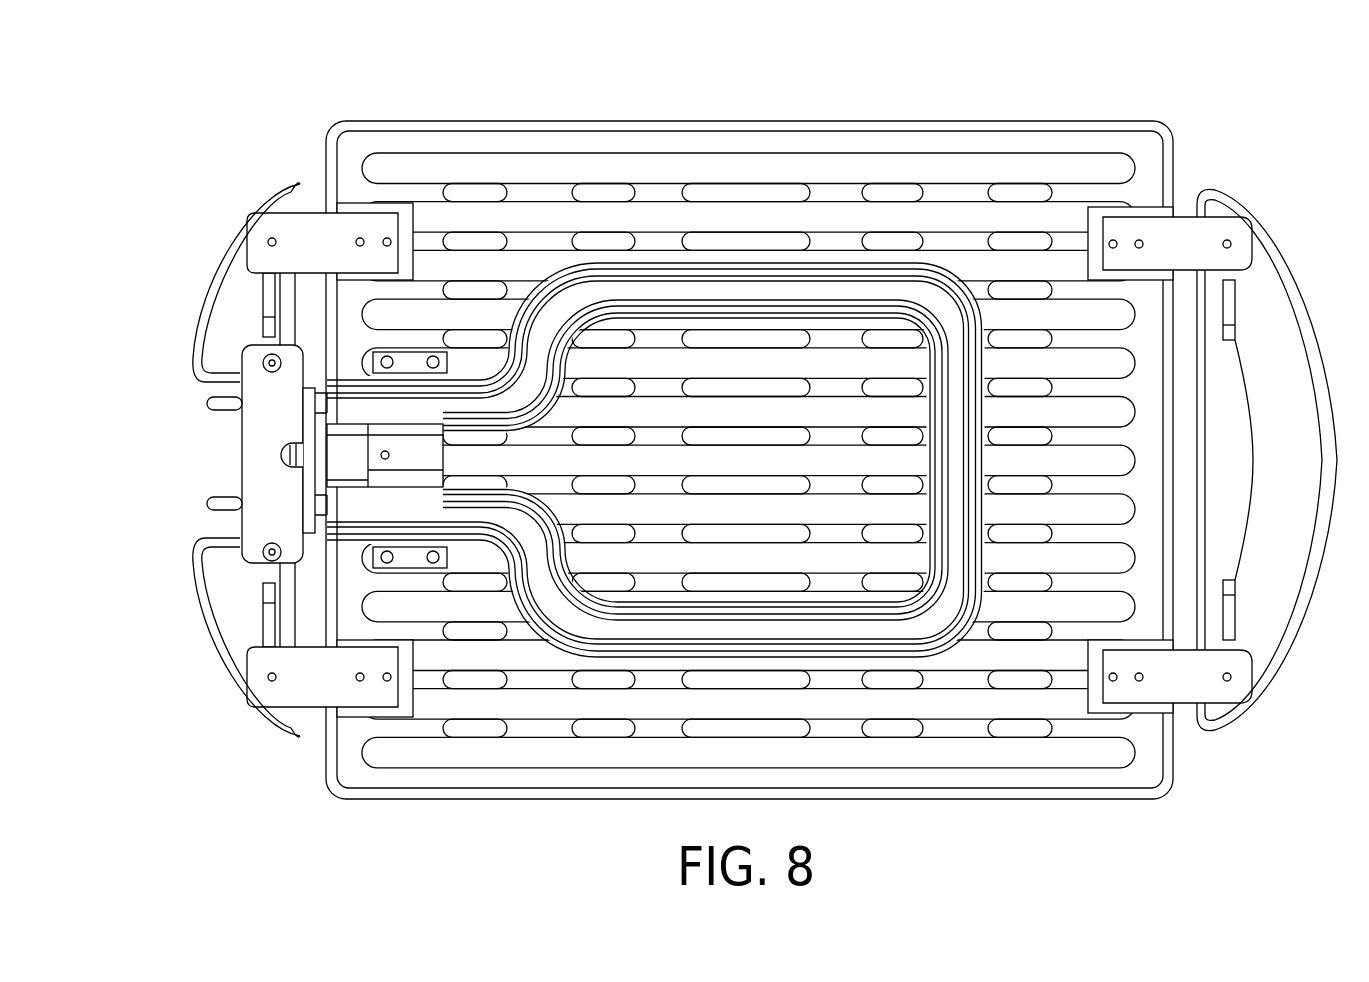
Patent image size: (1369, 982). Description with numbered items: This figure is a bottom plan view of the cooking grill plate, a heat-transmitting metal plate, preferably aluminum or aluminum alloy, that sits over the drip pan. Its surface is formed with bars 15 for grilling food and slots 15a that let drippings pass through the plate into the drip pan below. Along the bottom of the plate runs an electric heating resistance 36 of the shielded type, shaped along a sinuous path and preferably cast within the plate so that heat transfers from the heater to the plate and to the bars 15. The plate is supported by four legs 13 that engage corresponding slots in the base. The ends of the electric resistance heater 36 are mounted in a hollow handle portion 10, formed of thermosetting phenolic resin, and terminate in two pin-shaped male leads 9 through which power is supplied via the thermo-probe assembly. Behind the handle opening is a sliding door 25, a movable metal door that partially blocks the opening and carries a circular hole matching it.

The bars 15 is at (968, 170).
The slots 15a is at (726, 190).
The electric heating resistance 36 is at (541, 580).
The legs 13 is at (250, 298).
The hollow handle portion 10 is at (256, 522).
The sliding door 25 is at (285, 452).
The male leads 9 is at (207, 403).